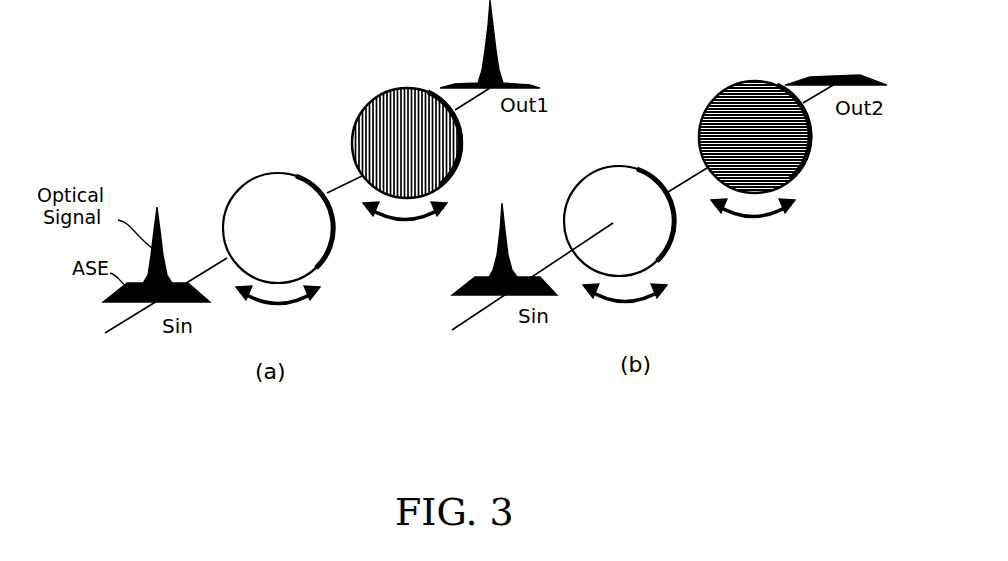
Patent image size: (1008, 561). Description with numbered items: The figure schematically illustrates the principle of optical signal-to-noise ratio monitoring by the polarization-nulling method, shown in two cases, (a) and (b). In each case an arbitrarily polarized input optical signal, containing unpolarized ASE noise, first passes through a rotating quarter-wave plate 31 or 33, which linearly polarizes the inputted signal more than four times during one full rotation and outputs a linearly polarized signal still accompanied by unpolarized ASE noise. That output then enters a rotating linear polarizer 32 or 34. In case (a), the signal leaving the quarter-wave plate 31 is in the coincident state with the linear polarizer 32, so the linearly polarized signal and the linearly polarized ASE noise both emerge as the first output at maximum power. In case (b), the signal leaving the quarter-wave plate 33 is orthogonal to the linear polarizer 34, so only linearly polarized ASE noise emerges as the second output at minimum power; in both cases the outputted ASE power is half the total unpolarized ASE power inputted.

The rotating quarter-wave plate 31 is at (312, 255).
The rotating linear polarizer 32 is at (458, 170).
The rotating quarter-wave plate 33 is at (657, 240).
The rotating linear polarizer 34 is at (807, 168).